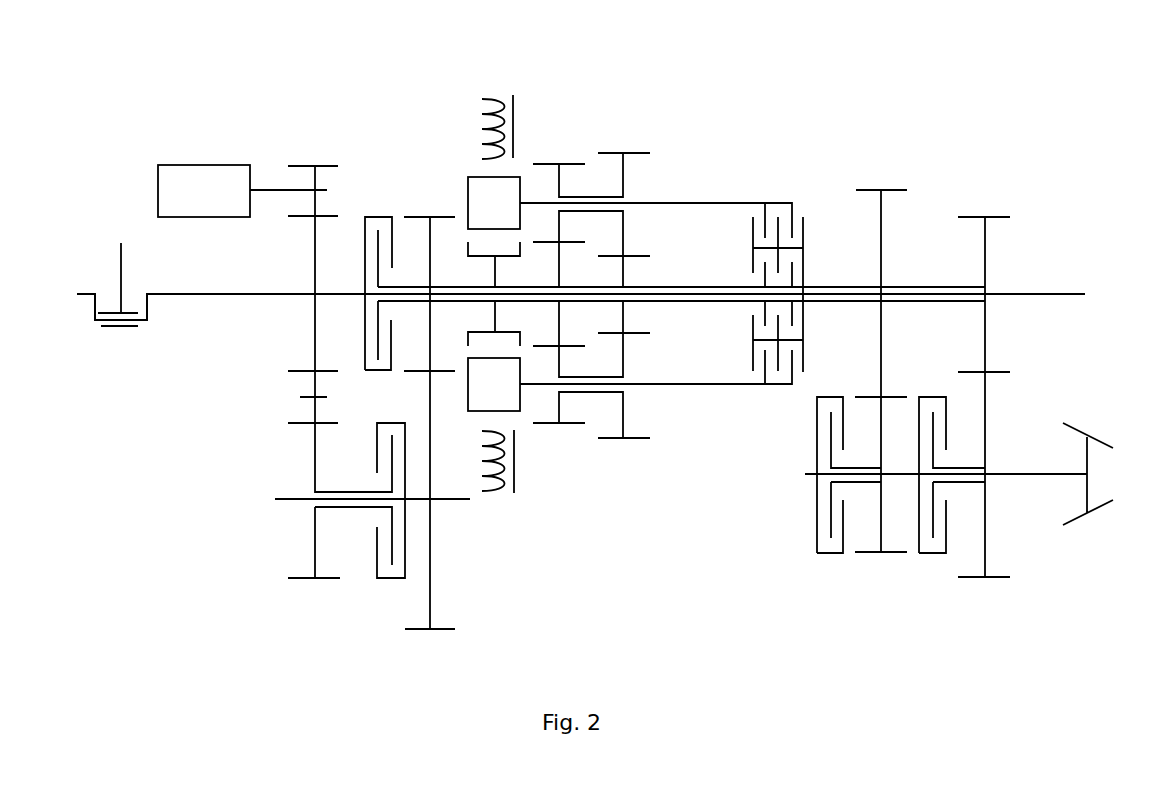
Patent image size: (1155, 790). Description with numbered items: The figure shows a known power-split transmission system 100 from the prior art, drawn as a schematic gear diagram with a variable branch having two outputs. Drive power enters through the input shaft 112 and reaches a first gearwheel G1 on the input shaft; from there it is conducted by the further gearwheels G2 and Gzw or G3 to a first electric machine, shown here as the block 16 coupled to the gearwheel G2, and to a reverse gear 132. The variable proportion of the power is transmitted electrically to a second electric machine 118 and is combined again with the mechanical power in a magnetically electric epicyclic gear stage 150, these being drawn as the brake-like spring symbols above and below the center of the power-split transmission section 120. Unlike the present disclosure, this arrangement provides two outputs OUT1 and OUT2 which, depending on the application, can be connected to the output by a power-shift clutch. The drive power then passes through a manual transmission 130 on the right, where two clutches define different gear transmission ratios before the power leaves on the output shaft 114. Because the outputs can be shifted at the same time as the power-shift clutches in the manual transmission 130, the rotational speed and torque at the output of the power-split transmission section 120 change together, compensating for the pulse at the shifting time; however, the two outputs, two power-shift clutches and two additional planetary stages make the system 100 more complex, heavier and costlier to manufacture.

The transmission system 100 is at (885, 90).
The input shaft 112 is at (197, 295).
The output shaft 114 is at (1005, 475).
The electric machine 16 is at (242, 191).
The second electric machine 118 is at (483, 112).
The magnetically electric epicyclic gear stage 150 is at (528, 490).
The power-split transmission section 120 is at (420, 672).
The manual transmission 130 is at (939, 167).
The reverse gear 132 is at (363, 592).
The first gearwheel G1 is at (313, 277).
The gearwheel G2 is at (307, 163).
The gearwheel G3 is at (315, 438).
The gearwheel Gzw is at (315, 378).
The first output OUT1 is at (656, 203).
The second output OUT2 is at (683, 287).